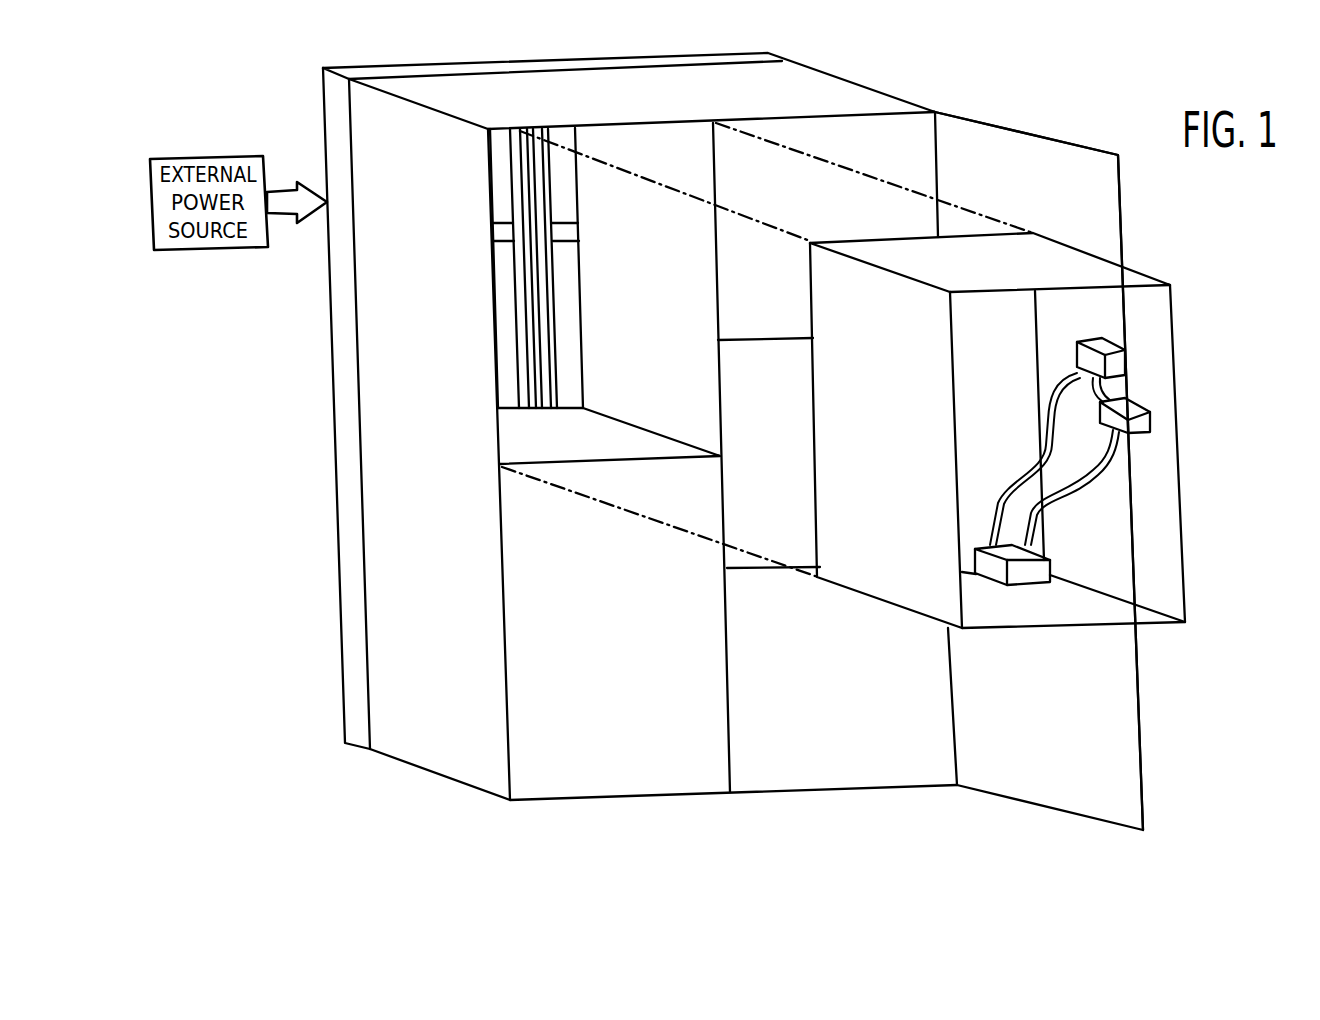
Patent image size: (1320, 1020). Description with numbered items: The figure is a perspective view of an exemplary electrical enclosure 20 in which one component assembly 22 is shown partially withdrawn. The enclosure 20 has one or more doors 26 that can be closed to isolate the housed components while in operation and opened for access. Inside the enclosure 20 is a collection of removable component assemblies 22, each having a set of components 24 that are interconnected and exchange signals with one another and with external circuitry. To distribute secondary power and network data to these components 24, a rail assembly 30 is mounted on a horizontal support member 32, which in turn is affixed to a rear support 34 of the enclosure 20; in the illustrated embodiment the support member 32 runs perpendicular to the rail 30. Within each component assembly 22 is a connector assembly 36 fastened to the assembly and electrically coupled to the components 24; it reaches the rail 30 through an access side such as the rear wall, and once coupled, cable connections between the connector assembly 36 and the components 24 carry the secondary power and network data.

The enclosure 20 is at (776, 42).
The component assembly 22 is at (915, 127).
The components 24 is at (1124, 358).
The door 26 is at (1134, 196).
The rail assembly 30 is at (525, 127).
The horizontal support member 32 is at (493, 232).
The rear support 34 is at (560, 130).
The connector assembly 36 is at (1037, 568).